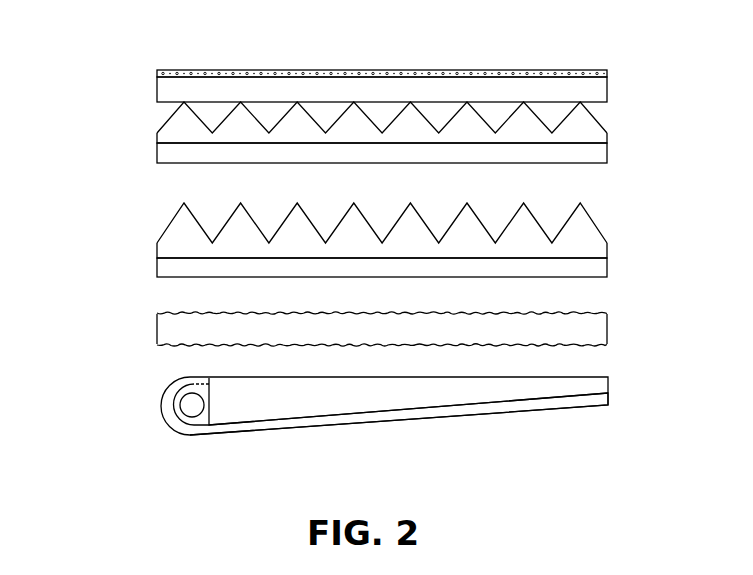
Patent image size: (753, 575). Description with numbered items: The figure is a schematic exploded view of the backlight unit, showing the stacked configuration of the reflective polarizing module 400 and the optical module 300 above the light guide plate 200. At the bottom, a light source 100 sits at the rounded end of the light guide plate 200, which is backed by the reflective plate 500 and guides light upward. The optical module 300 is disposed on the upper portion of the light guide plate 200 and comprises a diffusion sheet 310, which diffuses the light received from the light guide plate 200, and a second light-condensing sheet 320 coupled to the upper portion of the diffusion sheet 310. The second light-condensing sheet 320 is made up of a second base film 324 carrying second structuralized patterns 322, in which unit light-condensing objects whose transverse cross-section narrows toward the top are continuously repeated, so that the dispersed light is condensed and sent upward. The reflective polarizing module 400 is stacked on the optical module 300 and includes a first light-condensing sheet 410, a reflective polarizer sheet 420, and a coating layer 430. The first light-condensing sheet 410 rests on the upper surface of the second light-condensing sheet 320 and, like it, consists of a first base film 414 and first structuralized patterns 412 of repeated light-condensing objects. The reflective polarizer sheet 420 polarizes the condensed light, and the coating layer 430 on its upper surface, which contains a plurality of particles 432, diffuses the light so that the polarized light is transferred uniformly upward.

The light source 100 is at (190, 405).
The light guide plate 200 is at (263, 412).
The optical module 300 is at (88, 225).
The diffusion sheet 310 is at (163, 327).
The second light-condensing sheet 320 is at (157, 241).
The second structuralized patterns 322 is at (585, 242).
The second base film 324 is at (585, 267).
The reflective polarizing module 400 is at (86, 62).
The first light-condensing sheet 410 is at (157, 133).
The first structuralized patterns 412 is at (583, 128).
The first base film 414 is at (583, 152).
The reflective polarizer sheet 420 is at (168, 89).
The coating layer 430 is at (157, 71).
The particles 432 is at (182, 70).
The reflective plate 500 is at (430, 412).